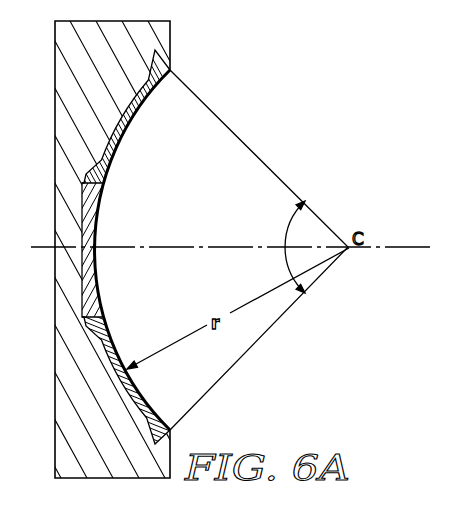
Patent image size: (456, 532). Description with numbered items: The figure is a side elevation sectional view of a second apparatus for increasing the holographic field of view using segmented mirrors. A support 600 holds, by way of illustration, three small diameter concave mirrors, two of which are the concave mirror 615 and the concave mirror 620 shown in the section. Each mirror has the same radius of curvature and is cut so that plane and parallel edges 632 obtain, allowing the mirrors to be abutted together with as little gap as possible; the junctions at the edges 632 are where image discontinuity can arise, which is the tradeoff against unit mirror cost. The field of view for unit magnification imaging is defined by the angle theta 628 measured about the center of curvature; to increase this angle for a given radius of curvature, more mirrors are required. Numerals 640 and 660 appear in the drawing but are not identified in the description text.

The support 600 is at (68, 416).
The concave mirror 615 is at (104, 298).
The concave mirror 620 is at (110, 160).
The angle theta 628 is at (293, 215).
The plane and parallel edges 632 is at (135, 250).
The optical axis 640 is at (423, 247).
The lower reflective coating layer 660 is at (148, 413).